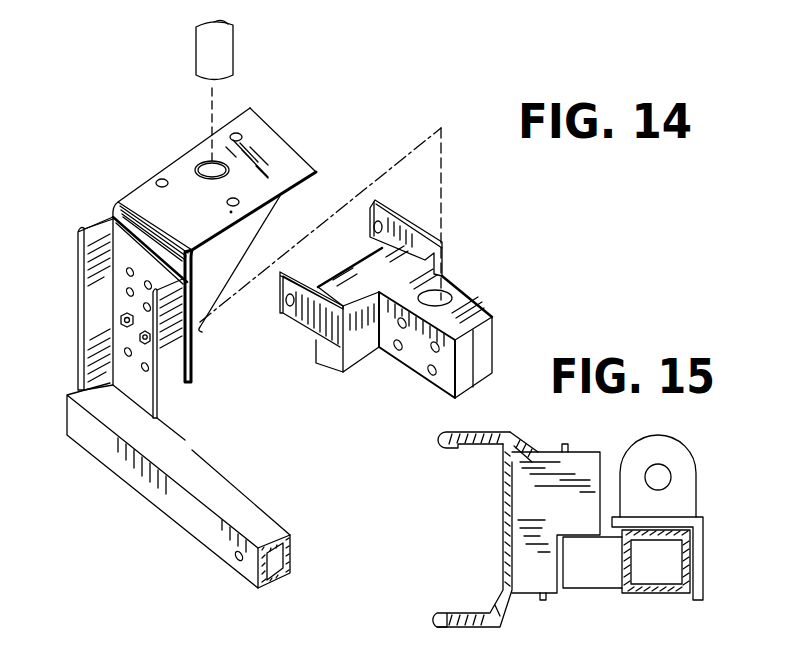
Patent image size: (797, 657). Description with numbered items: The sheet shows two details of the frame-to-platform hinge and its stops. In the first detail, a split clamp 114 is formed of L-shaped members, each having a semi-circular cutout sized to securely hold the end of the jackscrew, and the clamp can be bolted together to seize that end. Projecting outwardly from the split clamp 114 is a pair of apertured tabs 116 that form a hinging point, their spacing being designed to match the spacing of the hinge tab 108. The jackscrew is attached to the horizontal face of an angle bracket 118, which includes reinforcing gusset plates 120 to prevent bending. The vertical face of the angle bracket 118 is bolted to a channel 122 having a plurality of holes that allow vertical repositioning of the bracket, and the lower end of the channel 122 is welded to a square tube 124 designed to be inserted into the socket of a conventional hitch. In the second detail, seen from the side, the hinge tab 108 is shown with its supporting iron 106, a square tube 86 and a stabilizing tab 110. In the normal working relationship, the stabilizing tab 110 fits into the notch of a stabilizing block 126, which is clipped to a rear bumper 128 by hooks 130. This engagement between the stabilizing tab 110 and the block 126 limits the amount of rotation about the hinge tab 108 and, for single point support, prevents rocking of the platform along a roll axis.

In FIG. 15, the square tube 86 is at (660, 594).
In FIG. 15, the supporting iron 106 is at (703, 552).
In FIG. 15, the hinge tab 108 is at (697, 461).
In FIG. 15, the stabilizing tab 110 is at (593, 589).
In FIG. 14, the split clamp 114 is at (320, 365).
In FIG. 14, the tabs 116 is at (360, 217).
In FIG. 14, the angle bracket 118 is at (265, 142).
In FIG. 14, the reinforcing gusset plates 120 is at (208, 335).
In FIG. 14, the channel 122 is at (79, 322).
In FIG. 14, the square tube 124 is at (218, 532).
In FIG. 15, the stabilizing block 126 is at (567, 480).
In FIG. 15, the rear bumper 128 is at (492, 610).
In FIG. 15, the hooks 130 is at (483, 431).